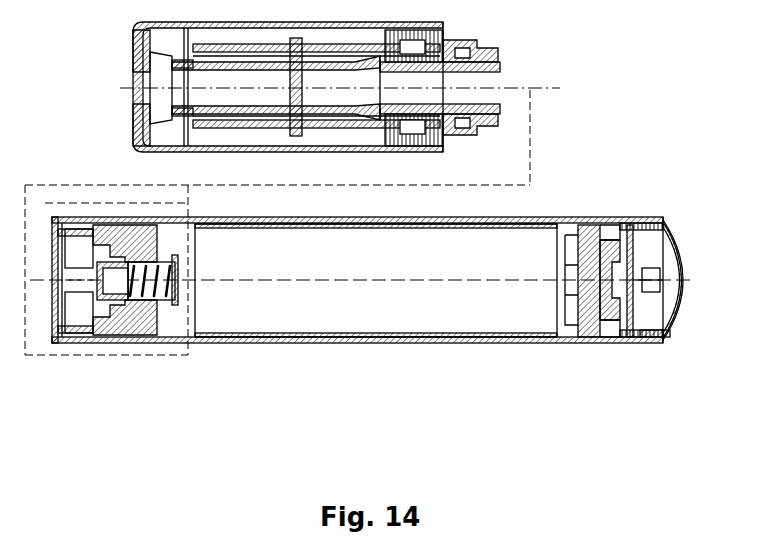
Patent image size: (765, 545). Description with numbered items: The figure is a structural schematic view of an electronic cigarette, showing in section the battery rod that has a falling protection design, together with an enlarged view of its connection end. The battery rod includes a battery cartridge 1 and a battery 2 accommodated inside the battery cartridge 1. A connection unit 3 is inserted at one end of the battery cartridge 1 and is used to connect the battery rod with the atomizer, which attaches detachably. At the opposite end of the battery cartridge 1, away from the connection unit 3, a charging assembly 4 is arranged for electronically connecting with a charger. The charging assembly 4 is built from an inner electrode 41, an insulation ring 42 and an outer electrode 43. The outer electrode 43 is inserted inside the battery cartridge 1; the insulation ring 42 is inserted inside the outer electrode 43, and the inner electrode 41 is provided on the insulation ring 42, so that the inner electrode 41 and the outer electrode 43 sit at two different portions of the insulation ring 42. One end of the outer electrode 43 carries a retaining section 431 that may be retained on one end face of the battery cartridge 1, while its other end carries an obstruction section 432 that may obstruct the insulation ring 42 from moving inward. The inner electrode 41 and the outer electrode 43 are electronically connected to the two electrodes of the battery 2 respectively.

The battery cartridge 1 is at (425, 342).
The battery 2 is at (496, 322).
The connection unit 3 is at (128, 352).
The charging assembly 4 is at (650, 351).
The inner electrode 41 is at (683, 279).
The insulation ring 42 is at (671, 330).
The outer electrode 43 is at (640, 342).
The retaining section 431 is at (665, 342).
The obstruction section 432 is at (610, 345).